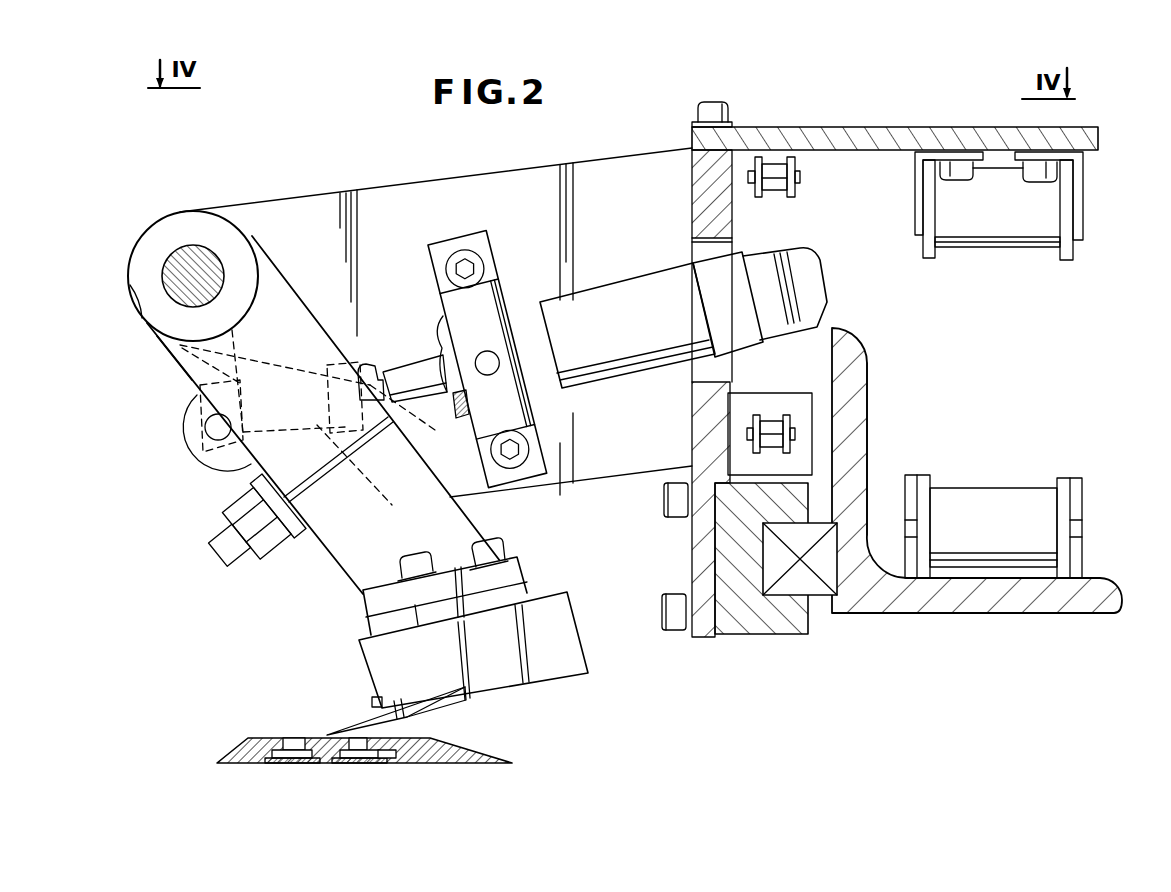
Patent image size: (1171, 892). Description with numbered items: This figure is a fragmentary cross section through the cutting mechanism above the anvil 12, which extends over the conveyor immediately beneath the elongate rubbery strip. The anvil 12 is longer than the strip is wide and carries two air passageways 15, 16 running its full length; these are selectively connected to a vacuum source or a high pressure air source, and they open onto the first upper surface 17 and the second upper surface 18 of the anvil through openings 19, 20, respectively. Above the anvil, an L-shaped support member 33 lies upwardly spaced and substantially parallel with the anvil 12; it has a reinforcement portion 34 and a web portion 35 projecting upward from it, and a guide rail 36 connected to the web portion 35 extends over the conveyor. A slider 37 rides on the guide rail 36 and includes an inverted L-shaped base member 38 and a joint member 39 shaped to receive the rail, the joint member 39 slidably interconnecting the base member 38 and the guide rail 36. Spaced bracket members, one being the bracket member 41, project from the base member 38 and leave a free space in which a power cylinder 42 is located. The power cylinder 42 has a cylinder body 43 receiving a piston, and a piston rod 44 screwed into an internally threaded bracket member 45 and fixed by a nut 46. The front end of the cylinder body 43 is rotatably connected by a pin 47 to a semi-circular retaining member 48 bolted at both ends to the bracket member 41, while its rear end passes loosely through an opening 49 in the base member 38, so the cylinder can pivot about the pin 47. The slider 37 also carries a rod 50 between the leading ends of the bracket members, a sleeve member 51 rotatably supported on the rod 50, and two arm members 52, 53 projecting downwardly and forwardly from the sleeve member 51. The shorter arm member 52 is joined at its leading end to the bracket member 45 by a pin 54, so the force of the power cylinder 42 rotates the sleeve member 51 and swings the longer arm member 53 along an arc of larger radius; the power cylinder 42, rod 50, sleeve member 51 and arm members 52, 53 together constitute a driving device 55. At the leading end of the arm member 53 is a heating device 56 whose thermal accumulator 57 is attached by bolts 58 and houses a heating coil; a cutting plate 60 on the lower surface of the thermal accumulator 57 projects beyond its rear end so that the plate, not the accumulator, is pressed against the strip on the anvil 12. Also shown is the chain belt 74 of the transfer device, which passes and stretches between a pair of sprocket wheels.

The anvil 12 is at (507, 743).
The air passageway 15 is at (292, 761).
The air passageway 16 is at (360, 761).
The first upper surface 17 is at (317, 737).
The second upper surface 18 is at (363, 750).
The opening 19 is at (296, 738).
The opening 20 is at (386, 758).
The L-shaped support member 33 is at (878, 356).
The reinforcement portion 34 is at (955, 613).
The web portion 35 is at (868, 441).
The guide rail 36 is at (820, 601).
The slider 37 is at (789, 97).
The inverted L-shaped base member 38 is at (884, 129).
The joint member 39 is at (758, 636).
The spaced bracket member 41 is at (627, 155).
The power cylinder 42 is at (631, 273).
The cylinder body 43 is at (588, 292).
The piston rod 44 is at (417, 364).
The internally threaded bracket member 45 is at (292, 381).
The nut 46 is at (364, 362).
The pin 47 is at (489, 375).
The retaining member 48 is at (503, 293).
The opening 49 is at (697, 378).
The rod 50 is at (180, 258).
The sleeve member 51 is at (180, 212).
The arm member 52 is at (184, 380).
The arm member 53 is at (287, 280).
The pin 54 is at (212, 432).
The driving device 55 is at (140, 333).
The heating device 56 is at (543, 580).
The thermal accumulator 57 is at (573, 603).
The bolts 58 is at (472, 540).
The cutting plate 60 is at (357, 715).
The chain belt 74 is at (768, 416).